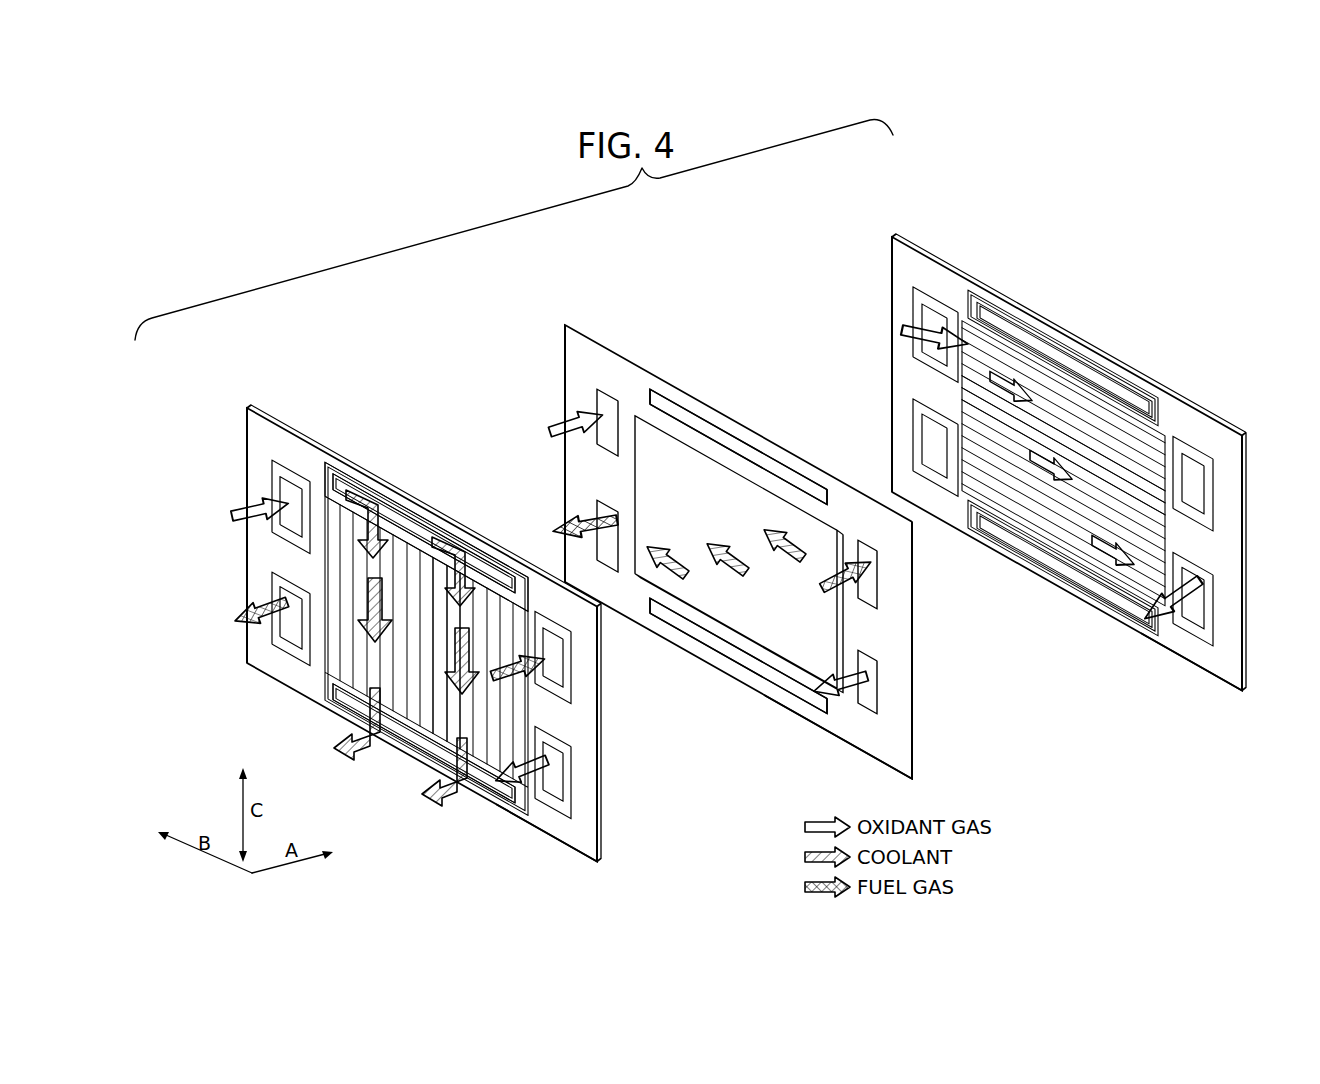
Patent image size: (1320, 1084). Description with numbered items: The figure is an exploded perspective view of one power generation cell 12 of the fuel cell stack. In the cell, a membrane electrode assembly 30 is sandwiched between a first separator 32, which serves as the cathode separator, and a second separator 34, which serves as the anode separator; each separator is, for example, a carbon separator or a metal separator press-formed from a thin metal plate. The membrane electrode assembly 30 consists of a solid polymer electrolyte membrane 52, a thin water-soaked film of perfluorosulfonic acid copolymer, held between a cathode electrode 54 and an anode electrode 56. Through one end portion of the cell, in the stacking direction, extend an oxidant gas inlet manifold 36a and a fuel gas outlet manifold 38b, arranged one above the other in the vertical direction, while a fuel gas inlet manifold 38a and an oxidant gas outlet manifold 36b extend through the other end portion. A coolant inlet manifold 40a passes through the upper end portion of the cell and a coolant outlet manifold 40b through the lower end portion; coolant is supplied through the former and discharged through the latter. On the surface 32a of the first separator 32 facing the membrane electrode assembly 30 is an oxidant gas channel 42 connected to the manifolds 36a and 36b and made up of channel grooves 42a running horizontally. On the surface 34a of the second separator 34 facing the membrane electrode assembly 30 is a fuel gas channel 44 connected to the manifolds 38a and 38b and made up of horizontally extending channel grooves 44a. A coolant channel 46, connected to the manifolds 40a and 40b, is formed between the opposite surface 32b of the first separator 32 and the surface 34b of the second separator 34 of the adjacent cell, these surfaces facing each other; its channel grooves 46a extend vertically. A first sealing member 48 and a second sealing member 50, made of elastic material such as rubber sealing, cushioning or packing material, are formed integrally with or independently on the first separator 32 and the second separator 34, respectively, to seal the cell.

The power generation cell 12 is at (633, 251).
The membrane electrode assembly 30 is at (562, 347).
The first separator 32 is at (888, 261).
The surface of the first separator 32a is at (1180, 632).
The surface of the first separator 32b is at (1217, 655).
The second separator 34 is at (244, 434).
The surface of the second separator 34a is at (578, 830).
The surface of the second separator 34b is at (538, 812).
The oxidant gas inlet manifold 36a is at (285, 488).
The oxidant gas outlet manifold 36b is at (552, 788).
The fuel gas inlet manifold 38a is at (552, 660).
The fuel gas outlet manifold 38b is at (290, 592).
The coolant inlet manifold 40a is at (340, 482).
The coolant outlet manifold 40b is at (397, 725).
The oxidant gas channel 42 is at (1015, 505).
The channel grooves 42a is at (1133, 473).
The fuel gas channel 44 is at (428, 530).
The channel grooves 44a is at (480, 565).
The coolant channel 46 is at (346, 646).
The channel grooves 46a is at (475, 737).
The first sealing member 48 is at (1003, 310).
The second sealing member 50 is at (392, 498).
The solid polymer electrolyte membrane 52 is at (880, 745).
The cathode electrode 54 is at (707, 473).
The anode electrode 56 is at (667, 453).